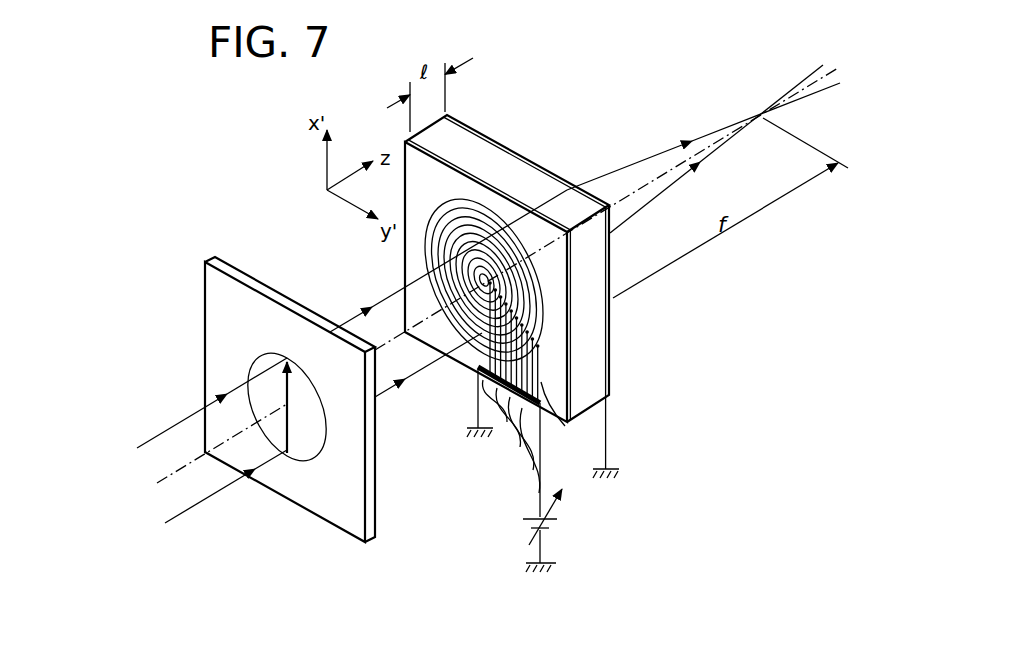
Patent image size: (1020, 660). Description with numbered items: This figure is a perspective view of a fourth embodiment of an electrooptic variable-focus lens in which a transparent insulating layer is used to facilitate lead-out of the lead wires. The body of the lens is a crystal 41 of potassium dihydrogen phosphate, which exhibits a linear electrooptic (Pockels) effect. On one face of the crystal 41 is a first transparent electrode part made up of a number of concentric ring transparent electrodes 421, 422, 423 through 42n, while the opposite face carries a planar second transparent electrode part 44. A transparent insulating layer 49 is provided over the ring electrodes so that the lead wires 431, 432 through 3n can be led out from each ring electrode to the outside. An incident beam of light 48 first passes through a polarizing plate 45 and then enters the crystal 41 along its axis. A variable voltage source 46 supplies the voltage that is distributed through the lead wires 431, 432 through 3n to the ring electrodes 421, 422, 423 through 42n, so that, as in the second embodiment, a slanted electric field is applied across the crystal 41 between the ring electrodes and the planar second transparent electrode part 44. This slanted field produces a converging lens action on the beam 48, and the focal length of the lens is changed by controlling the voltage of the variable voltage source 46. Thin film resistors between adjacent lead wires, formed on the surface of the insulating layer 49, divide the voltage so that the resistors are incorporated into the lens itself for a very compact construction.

The crystal 41 is at (560, 190).
The planar second transparent electrode part 44 is at (530, 163).
The transparent insulating layer 49 is at (484, 183).
The polarizing plate 45 is at (217, 303).
The incident beam of light 48 is at (363, 310).
The concentric ring transparent electrode 421 is at (480, 272).
The concentric ring transparent electrode 422 is at (486, 270).
The concentric ring transparent electrode 423 is at (503, 279).
The concentric ring transparent electrode 42n is at (548, 293).
The lead wire 431 is at (478, 370).
The lead wire 432 is at (483, 354).
The lead wire 3n is at (568, 417).
The variable voltage source 46 is at (557, 522).